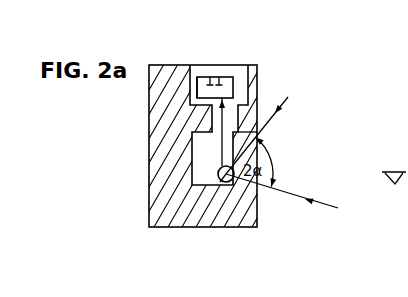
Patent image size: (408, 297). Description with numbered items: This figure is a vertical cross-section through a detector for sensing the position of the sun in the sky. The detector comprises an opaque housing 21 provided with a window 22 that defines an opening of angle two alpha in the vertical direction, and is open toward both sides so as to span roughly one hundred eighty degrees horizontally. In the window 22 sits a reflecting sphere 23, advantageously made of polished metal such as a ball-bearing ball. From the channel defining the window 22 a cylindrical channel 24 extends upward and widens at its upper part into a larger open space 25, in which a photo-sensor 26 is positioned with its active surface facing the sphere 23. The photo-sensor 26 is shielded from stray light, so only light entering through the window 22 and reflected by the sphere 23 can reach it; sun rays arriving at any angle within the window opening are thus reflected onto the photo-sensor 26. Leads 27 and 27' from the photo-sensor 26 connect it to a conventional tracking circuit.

The housing 21 is at (166, 171).
The window 22 is at (214, 166).
The reflecting sphere 23 is at (225, 176).
The cylindrical channel 24 is at (213, 116).
The open space 25 is at (236, 92).
The photo-sensor 26 is at (198, 90).
The lead 27 is at (200, 50).
The lead 27' is at (232, 50).